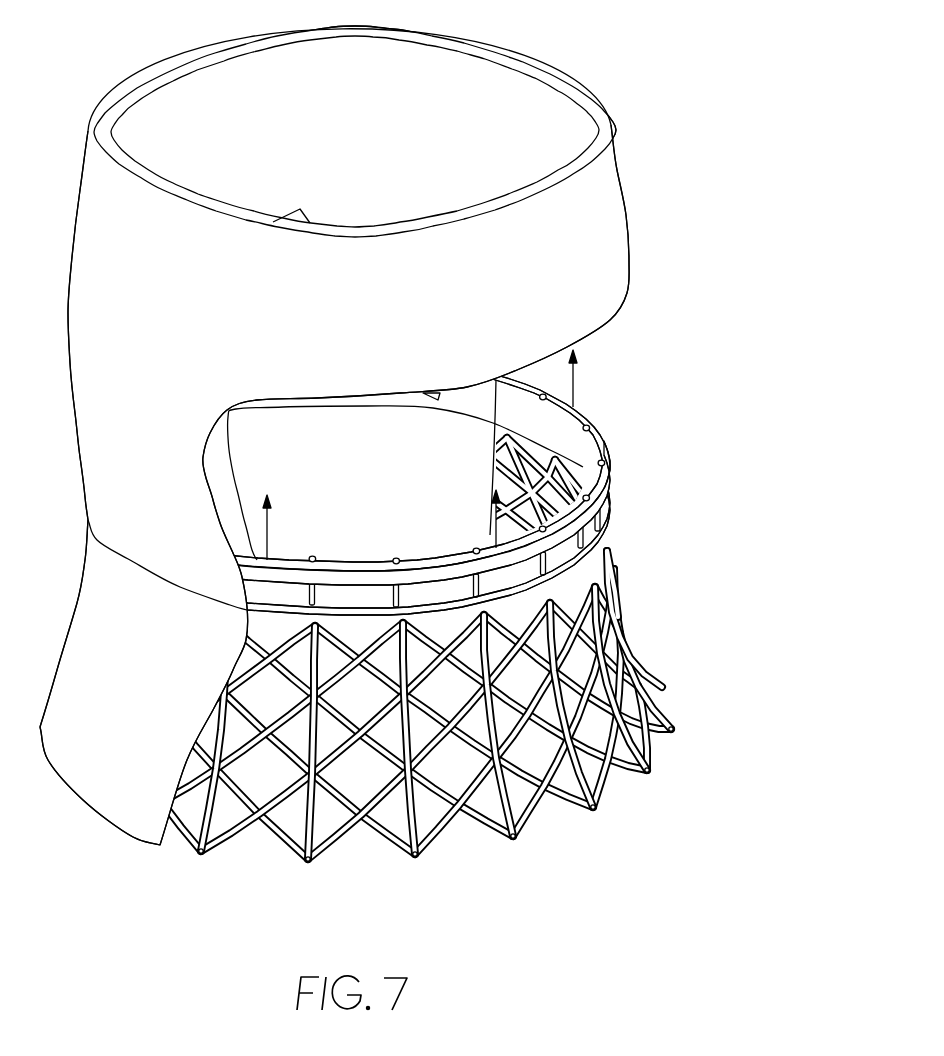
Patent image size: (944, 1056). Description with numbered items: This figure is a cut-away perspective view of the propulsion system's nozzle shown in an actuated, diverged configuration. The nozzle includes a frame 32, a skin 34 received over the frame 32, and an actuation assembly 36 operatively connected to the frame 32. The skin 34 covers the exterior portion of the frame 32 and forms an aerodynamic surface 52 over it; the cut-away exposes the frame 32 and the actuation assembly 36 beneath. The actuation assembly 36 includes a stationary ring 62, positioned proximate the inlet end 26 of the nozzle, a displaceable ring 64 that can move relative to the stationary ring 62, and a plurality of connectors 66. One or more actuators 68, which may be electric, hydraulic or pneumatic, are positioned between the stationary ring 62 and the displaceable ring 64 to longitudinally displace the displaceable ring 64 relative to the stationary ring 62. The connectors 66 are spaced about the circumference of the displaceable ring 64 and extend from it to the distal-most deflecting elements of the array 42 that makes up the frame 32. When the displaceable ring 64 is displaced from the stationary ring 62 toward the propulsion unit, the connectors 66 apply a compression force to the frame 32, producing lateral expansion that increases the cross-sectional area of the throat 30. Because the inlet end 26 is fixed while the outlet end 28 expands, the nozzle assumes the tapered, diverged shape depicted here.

The inlet end 26 is at (471, 646).
The outlet end 28 is at (700, 782).
The throat 30 is at (605, 840).
The frame 32 is at (618, 597).
The skin 34 is at (327, 435).
The actuation assembly 36 is at (605, 380).
The array 42 is at (670, 641).
The aerodynamic surface 52 is at (147, 727).
The stationary ring 62 is at (612, 529).
The displaceable ring 64 is at (627, 485).
The connectors 66 is at (212, 814).
The actuators 68 is at (443, 590).